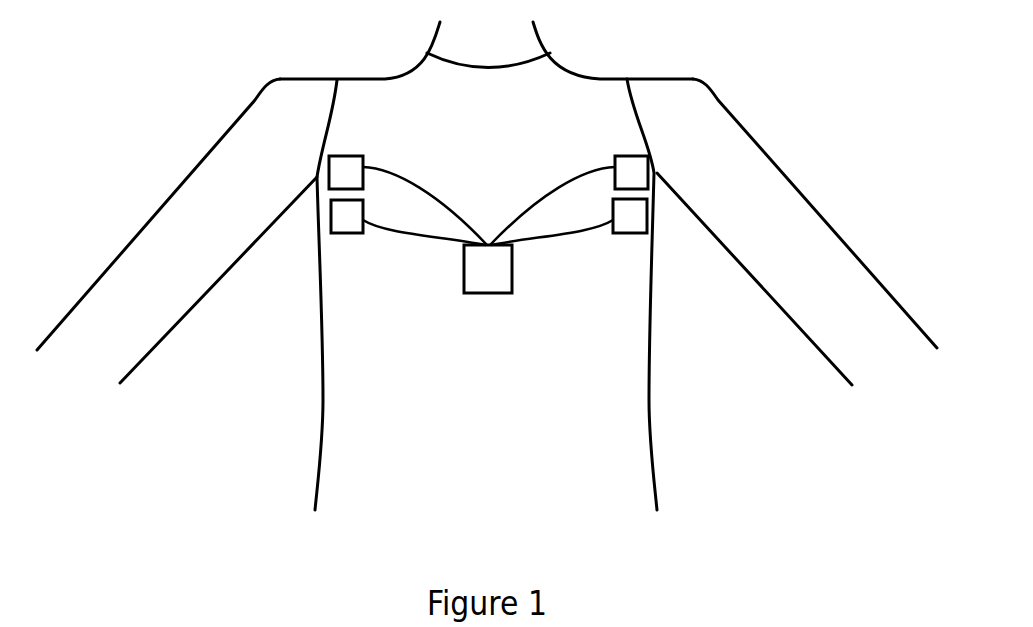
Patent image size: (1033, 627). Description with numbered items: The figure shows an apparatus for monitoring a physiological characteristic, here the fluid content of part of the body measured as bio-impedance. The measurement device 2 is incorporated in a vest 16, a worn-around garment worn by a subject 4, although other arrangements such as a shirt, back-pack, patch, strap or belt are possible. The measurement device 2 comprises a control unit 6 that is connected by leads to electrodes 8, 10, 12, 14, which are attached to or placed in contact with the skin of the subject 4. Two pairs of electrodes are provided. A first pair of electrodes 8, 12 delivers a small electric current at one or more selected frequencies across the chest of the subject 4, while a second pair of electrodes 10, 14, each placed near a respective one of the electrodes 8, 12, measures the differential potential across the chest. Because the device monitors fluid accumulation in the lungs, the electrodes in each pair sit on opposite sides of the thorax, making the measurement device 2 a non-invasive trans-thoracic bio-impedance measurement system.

The measurement device 2 is at (683, 290).
The subject 4 is at (260, 115).
The control unit 6 is at (498, 279).
The electrode 8 is at (408, 222).
The electrode 10 is at (408, 200).
The electrode 12 is at (569, 200).
The electrode 14 is at (569, 222).
The vest 16 is at (337, 261).